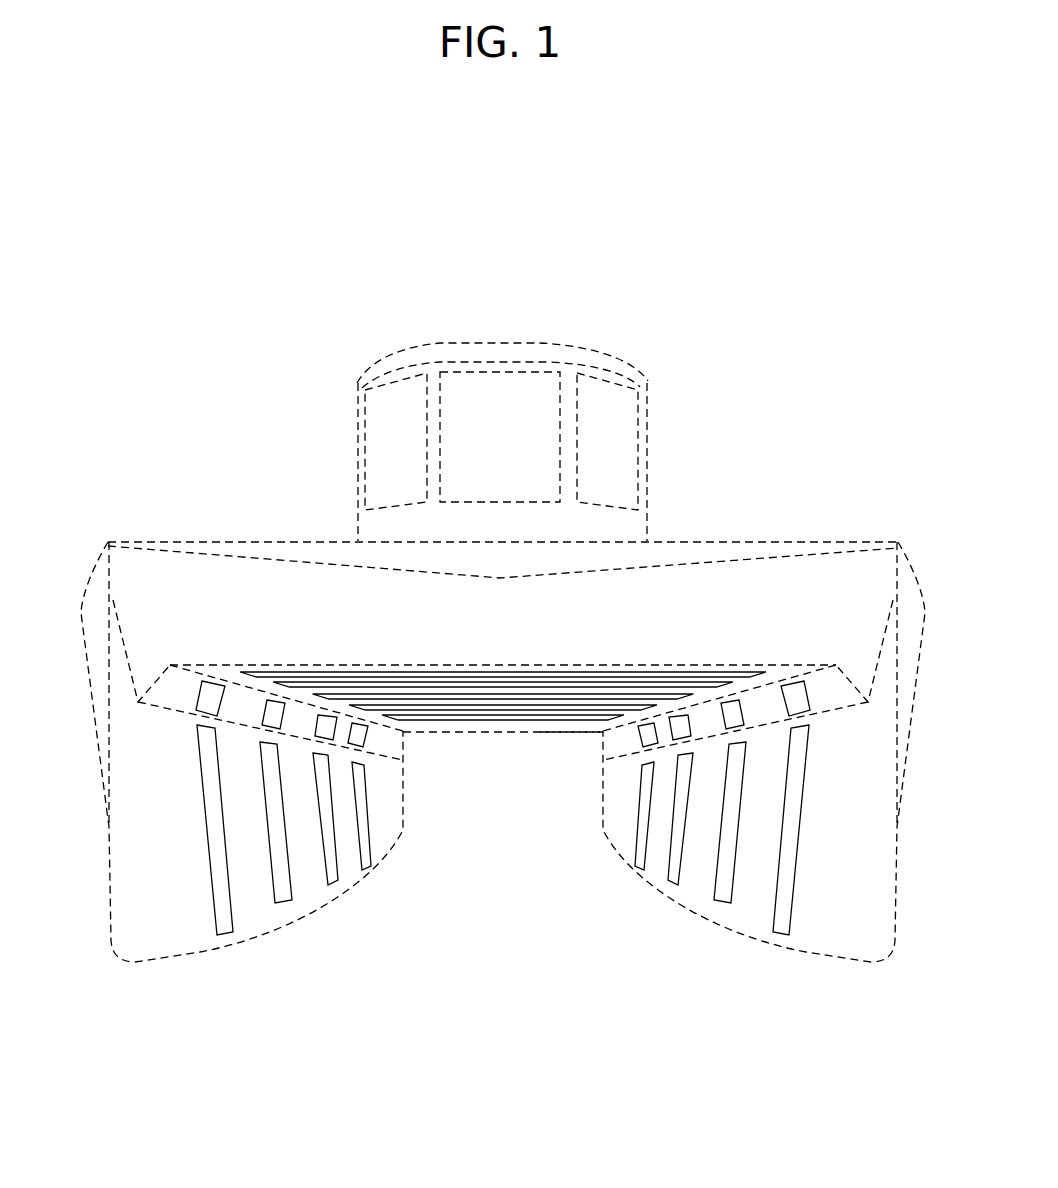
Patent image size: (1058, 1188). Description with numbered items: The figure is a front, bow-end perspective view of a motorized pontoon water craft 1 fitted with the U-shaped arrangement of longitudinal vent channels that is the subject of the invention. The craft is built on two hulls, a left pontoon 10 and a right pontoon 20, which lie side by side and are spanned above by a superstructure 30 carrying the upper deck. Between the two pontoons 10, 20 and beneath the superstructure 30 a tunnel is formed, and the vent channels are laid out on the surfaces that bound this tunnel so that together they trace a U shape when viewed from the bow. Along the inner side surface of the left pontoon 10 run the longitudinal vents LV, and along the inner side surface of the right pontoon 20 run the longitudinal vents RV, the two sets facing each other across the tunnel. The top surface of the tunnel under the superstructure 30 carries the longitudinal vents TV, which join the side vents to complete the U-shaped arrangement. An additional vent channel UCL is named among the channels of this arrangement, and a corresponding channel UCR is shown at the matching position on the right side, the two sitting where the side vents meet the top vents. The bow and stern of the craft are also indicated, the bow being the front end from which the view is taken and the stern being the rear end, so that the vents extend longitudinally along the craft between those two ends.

The motorized pontoon water craft 1 is at (270, 223).
The left pontoon 10 is at (133, 857).
The right pontoon 20 is at (872, 855).
The superstructure with upper deck 30 is at (707, 608).
The longitudinal vent channel UCL is at (213, 696).
The upper center right louver UCR is at (793, 696).
The longitudinal vents along top surface of the tunnel TV is at (503, 734).
The longitudinal vents along inner side surface of the left pontoon LV is at (224, 914).
The longitudinal vents along inner side surface of the right pontoon RV is at (723, 899).